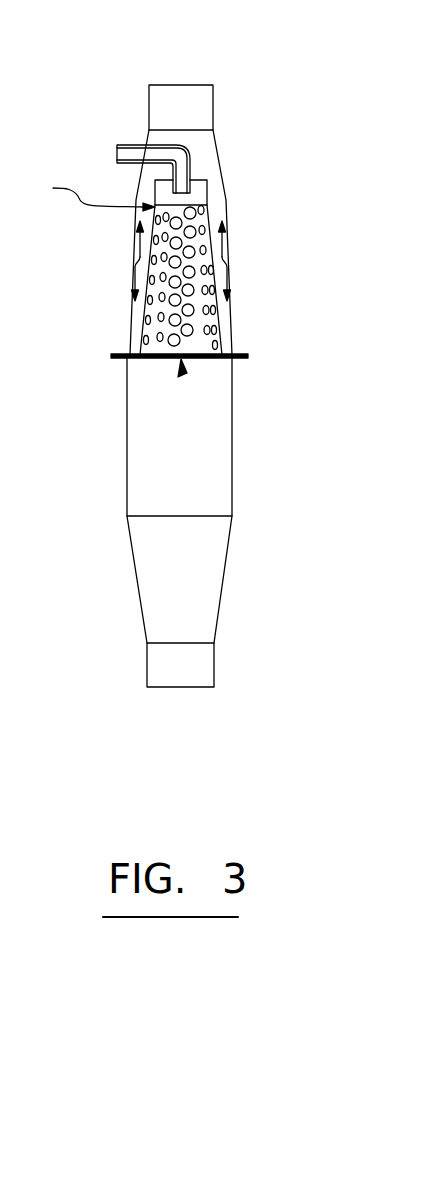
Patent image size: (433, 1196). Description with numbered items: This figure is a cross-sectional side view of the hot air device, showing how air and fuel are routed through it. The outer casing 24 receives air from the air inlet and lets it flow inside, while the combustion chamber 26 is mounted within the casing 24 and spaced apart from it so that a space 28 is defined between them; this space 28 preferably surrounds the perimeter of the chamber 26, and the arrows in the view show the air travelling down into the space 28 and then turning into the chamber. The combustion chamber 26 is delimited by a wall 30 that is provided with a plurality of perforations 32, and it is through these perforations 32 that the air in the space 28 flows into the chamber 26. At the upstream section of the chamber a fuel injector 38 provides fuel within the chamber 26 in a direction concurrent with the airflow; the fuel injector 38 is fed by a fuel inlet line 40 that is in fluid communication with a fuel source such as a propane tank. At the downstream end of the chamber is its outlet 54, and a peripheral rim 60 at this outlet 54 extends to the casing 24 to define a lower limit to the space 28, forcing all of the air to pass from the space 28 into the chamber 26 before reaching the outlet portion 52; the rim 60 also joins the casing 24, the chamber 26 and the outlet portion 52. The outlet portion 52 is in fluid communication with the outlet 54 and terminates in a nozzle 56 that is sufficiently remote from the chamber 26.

The casing 24 is at (220, 160).
The combustion chamber 26 is at (87, 193).
The space 28 is at (136, 265).
The wall 30 is at (139, 337).
The perforations 32 is at (147, 318).
The fuel injector 38 is at (210, 217).
The fuel inlet line 40 is at (127, 145).
The outlet portion 52 is at (150, 462).
The outlet 54 is at (183, 372).
The nozzle 56 is at (165, 657).
The peripheral rim 60 is at (242, 353).